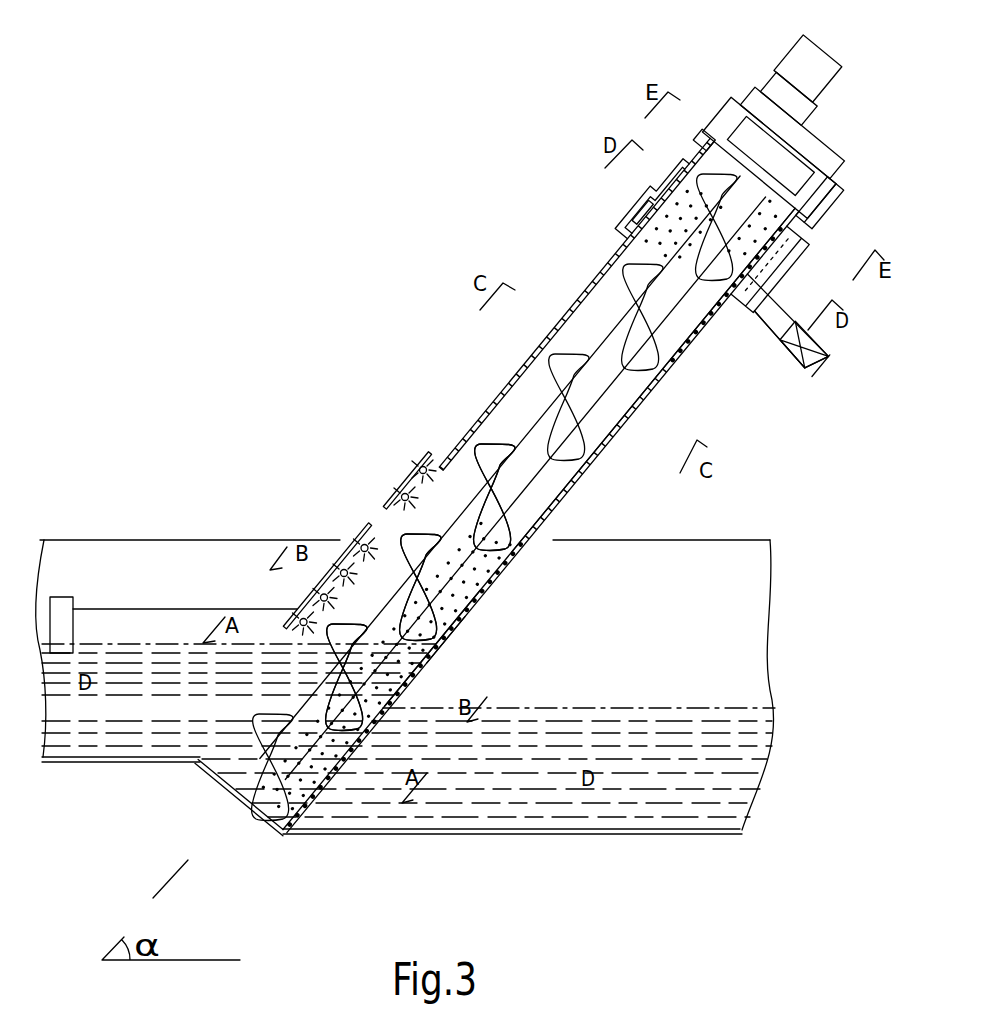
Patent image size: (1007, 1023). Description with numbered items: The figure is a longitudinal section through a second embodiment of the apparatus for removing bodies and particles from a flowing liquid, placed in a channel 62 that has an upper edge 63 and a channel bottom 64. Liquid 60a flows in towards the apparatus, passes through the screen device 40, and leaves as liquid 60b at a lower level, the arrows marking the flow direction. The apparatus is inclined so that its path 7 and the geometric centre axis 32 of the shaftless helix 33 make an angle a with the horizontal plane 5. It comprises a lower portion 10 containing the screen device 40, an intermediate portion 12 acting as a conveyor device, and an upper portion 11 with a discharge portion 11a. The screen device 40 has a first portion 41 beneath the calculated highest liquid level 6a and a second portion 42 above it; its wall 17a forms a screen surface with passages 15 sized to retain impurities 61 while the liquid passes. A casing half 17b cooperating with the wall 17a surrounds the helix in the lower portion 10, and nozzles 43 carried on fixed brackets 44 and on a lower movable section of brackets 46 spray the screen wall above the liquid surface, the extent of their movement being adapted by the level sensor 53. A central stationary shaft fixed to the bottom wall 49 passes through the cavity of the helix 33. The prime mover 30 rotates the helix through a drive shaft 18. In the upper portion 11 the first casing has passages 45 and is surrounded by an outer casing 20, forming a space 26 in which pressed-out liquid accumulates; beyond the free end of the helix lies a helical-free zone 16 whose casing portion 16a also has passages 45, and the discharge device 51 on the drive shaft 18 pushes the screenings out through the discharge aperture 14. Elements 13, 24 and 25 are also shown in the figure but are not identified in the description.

The horizontal plane 5 is at (222, 960).
The calculated highest liquid level 6a is at (100, 608).
The path 7 is at (584, 484).
The lower portion 10 is at (412, 755).
The upper portion 11 is at (705, 158).
The discharge portion 11a is at (750, 125).
The intermediate portion 12 is at (497, 392).
The flange 13 is at (832, 182).
The discharge aperture 14 is at (740, 122).
The passages for liquids 15 is at (452, 660).
The helical-free zone 16 is at (670, 157).
The casing portion between helix end and discharge aperture 16a is at (637, 200).
The wall of the screen device 17a is at (463, 622).
The displaceable casing half 17b is at (612, 465).
The drive shaft 18 is at (812, 238).
The outer casing 20 is at (800, 270).
The valve body 24 is at (768, 345).
The outlet end 25 is at (800, 368).
The space for accumulating liquid 26 is at (745, 318).
The prime mover 30 is at (760, 88).
The geometric centre axis 32 is at (822, 128).
The shaftless helix 33 is at (493, 447).
The screen device 40 is at (333, 812).
The first portion of the screen device 41 is at (465, 740).
The second portion of the screen device 42 is at (497, 582).
The nozzles 43 is at (421, 468).
The brackets 44 is at (400, 498).
The passages for liquid 45 is at (808, 330).
The lower movable section of brackets 46 is at (345, 548).
The bottom wall 49 is at (285, 838).
The discharge device 51 is at (826, 205).
The level sensor 53 is at (70, 597).
The liquid before the screen device 60a is at (112, 720).
The liquid after the screen device 60b is at (653, 738).
The impurities 61 is at (157, 643).
The channel 62 is at (138, 563).
The upper edge of the channel 63 is at (230, 540).
The channel bottom 64 is at (132, 762).